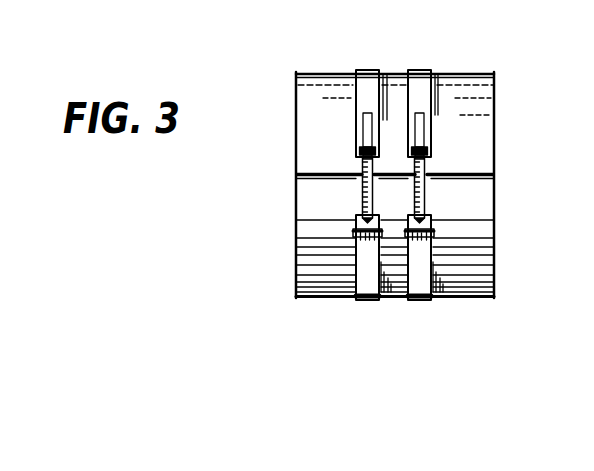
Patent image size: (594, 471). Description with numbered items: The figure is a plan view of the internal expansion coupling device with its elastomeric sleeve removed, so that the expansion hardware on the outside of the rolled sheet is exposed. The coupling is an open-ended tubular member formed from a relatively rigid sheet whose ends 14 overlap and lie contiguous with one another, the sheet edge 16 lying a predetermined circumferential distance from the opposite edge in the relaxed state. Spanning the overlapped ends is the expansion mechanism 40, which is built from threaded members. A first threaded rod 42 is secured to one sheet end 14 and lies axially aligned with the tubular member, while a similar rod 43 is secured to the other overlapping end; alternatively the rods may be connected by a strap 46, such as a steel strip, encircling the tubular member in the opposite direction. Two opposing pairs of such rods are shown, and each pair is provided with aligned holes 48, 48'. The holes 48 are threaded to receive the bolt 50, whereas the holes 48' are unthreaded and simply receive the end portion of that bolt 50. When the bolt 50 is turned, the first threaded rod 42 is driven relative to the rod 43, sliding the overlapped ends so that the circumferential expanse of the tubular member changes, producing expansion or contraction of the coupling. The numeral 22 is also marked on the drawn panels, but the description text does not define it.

The sheet end 14 is at (483, 232).
The sheet edge 16 is at (478, 183).
The side wall 22 is at (296, 98).
The expansion mechanism 40 is at (432, 201).
The first threaded rod 42 is at (355, 219).
The threaded rod 43 is at (357, 157).
The strap 46 is at (418, 69).
The threaded hole 48 is at (298, 195).
The unthreaded hole 48' is at (306, 167).
The bolt 50 is at (428, 168).